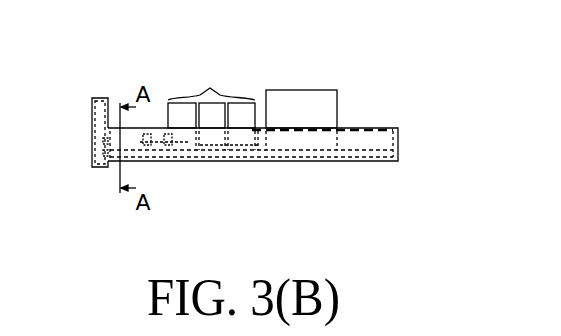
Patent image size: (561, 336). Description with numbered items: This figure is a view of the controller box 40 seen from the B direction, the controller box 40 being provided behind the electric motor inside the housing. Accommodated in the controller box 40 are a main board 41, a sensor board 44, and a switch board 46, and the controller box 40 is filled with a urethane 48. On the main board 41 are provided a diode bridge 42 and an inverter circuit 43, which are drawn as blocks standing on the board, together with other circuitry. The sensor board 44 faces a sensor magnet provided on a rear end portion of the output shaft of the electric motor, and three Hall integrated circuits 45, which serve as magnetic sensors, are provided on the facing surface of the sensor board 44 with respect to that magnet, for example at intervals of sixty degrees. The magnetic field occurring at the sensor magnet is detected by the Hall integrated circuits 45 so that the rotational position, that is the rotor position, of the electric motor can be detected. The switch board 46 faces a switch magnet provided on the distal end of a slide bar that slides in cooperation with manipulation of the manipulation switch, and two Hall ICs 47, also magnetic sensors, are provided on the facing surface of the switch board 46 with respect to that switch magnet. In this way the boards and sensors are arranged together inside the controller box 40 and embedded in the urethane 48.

The controller box 40 is at (393, 162).
The main board 41 is at (255, 145).
The diode bridge 42 is at (300, 90).
The inverter circuit 43 is at (210, 87).
The sensor board 44 is at (115, 166).
The Hall integrated circuits 45 is at (104, 153).
The switch board 46 is at (181, 142).
The Hall ICs 47 is at (148, 138).
The urethane 48 is at (373, 128).